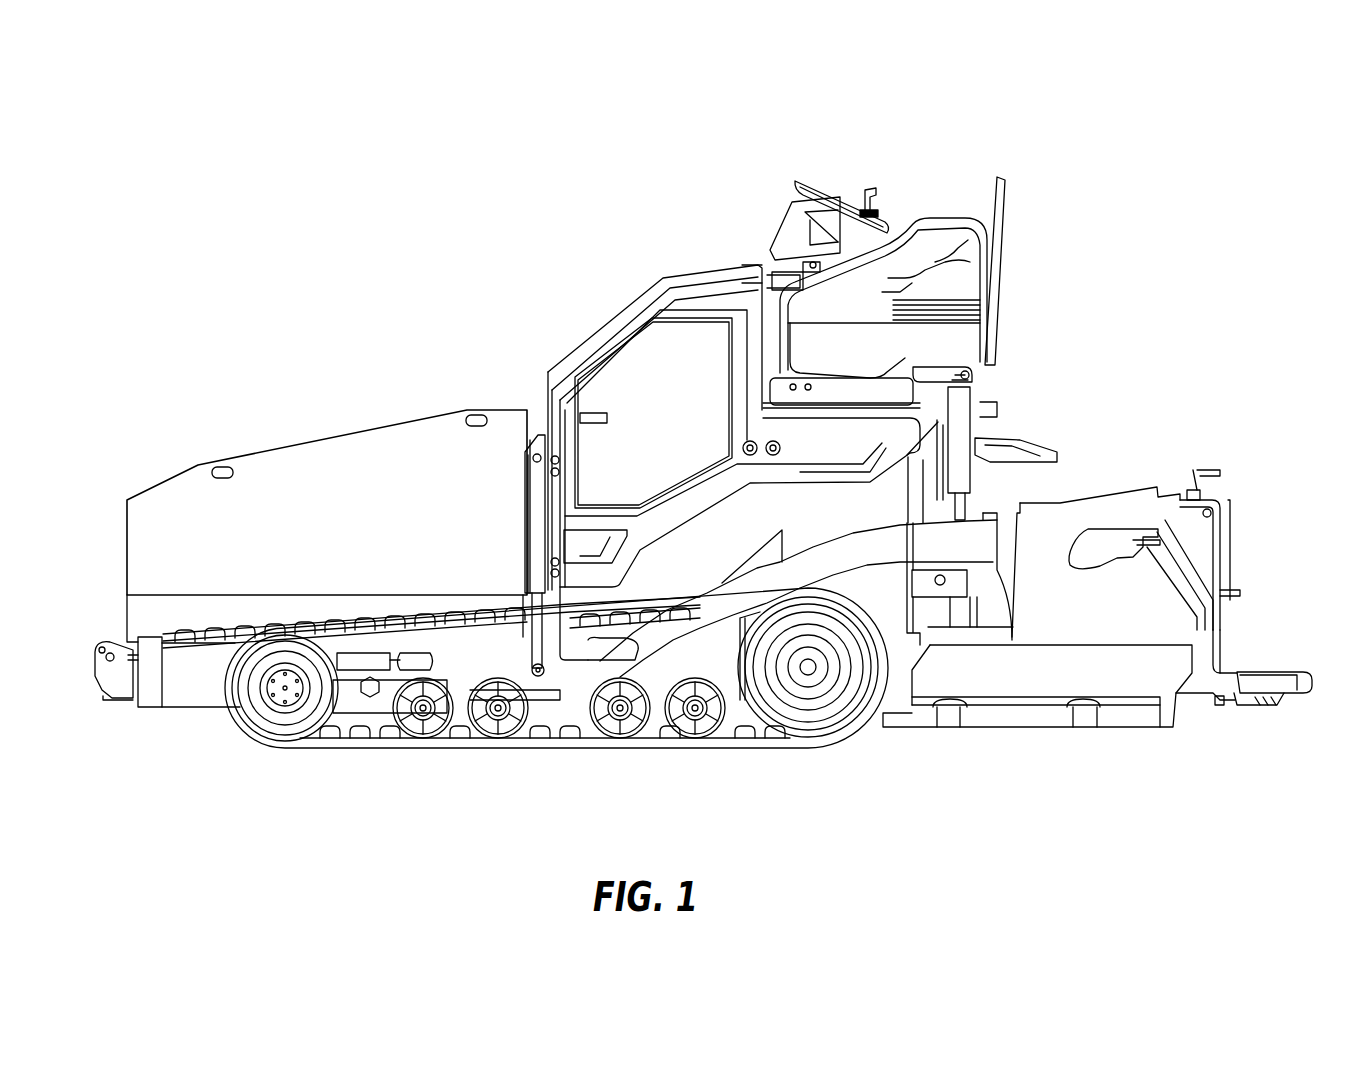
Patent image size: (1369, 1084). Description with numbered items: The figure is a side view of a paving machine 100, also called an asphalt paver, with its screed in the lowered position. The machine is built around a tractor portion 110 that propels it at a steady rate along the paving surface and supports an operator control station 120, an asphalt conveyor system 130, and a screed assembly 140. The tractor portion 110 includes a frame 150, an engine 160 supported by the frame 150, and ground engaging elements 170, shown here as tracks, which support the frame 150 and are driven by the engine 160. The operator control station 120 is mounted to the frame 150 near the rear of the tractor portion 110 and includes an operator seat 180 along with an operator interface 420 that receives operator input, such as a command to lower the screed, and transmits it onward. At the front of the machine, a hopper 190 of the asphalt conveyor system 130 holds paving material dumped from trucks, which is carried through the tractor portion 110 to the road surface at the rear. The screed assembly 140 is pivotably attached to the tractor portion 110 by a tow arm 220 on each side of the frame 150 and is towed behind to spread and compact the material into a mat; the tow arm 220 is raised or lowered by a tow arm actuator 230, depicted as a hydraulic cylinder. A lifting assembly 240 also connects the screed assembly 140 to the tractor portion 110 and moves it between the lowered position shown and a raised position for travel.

The paving machine 100 is at (378, 140).
The tractor portion 110 is at (530, 343).
The operator control station 120 is at (933, 207).
The asphalt conveyor system 130 is at (165, 440).
The screed assembly 140 is at (1238, 474).
The frame 150 is at (799, 520).
The engine 160 is at (674, 415).
The ground engaging elements 170 is at (786, 742).
The operator seat 180 is at (998, 211).
The hopper 190 is at (358, 518).
The tow arm 220 is at (873, 552).
The tow arm actuator 230 is at (537, 592).
The lifting assembly 240 is at (977, 440).
The operator interface 420 is at (803, 178).